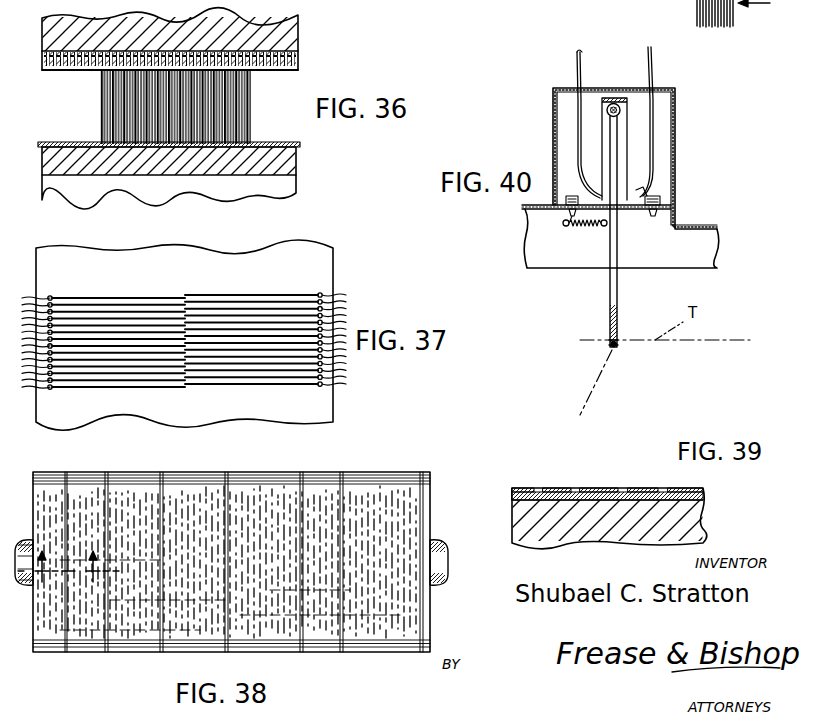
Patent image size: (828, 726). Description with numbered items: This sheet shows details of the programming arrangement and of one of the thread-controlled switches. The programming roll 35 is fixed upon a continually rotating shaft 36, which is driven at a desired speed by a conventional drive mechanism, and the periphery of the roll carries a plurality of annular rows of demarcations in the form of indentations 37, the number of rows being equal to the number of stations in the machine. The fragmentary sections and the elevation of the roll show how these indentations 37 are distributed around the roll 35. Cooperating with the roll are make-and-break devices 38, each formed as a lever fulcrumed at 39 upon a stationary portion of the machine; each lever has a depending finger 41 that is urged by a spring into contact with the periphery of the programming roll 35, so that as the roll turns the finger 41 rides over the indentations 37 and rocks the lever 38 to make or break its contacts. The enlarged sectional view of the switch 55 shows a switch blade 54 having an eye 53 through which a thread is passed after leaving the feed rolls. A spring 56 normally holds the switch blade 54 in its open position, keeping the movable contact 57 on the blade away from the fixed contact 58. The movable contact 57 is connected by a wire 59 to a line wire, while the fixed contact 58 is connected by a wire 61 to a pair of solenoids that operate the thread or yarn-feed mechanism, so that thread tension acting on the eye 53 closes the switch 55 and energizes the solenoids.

In FIG. 36, the programming roll 35 is at (300, 158).
In FIG. 37, the programming roll 35 is at (333, 403).
In FIG. 38, the programming roll 35 is at (362, 471).
In FIG. 39, the programming roll 35 is at (516, 487).
In FIG. 38, the continually rotating shaft 36 is at (436, 546).
In FIG. 36, the indentations 37 is at (273, 142).
In FIG. 38, the indentations 37 is at (170, 500).
In FIG. 39, the indentations 37 is at (572, 489).
In FIG. 36, the make-and-break device 38 is at (115, 110).
In FIG. 37, the make-and-break device 38 is at (110, 322).
In FIG. 38, the fulcrum 39 is at (68, 573).
In FIG. 36, the depending finger 41 is at (232, 115).
In FIG. 40, the eye 53 is at (606, 340).
In FIG. 40, the switch blade 54 is at (618, 292).
In FIG. 40, the switch 55 is at (678, 148).
In FIG. 40, the spring 56 is at (583, 230).
In FIG. 40, the movable contact 57 is at (621, 190).
In FIG. 40, the fixed contact 58 is at (635, 207).
In FIG. 40, the wire 59 is at (575, 70).
In FIG. 40, the wire 61 is at (655, 72).